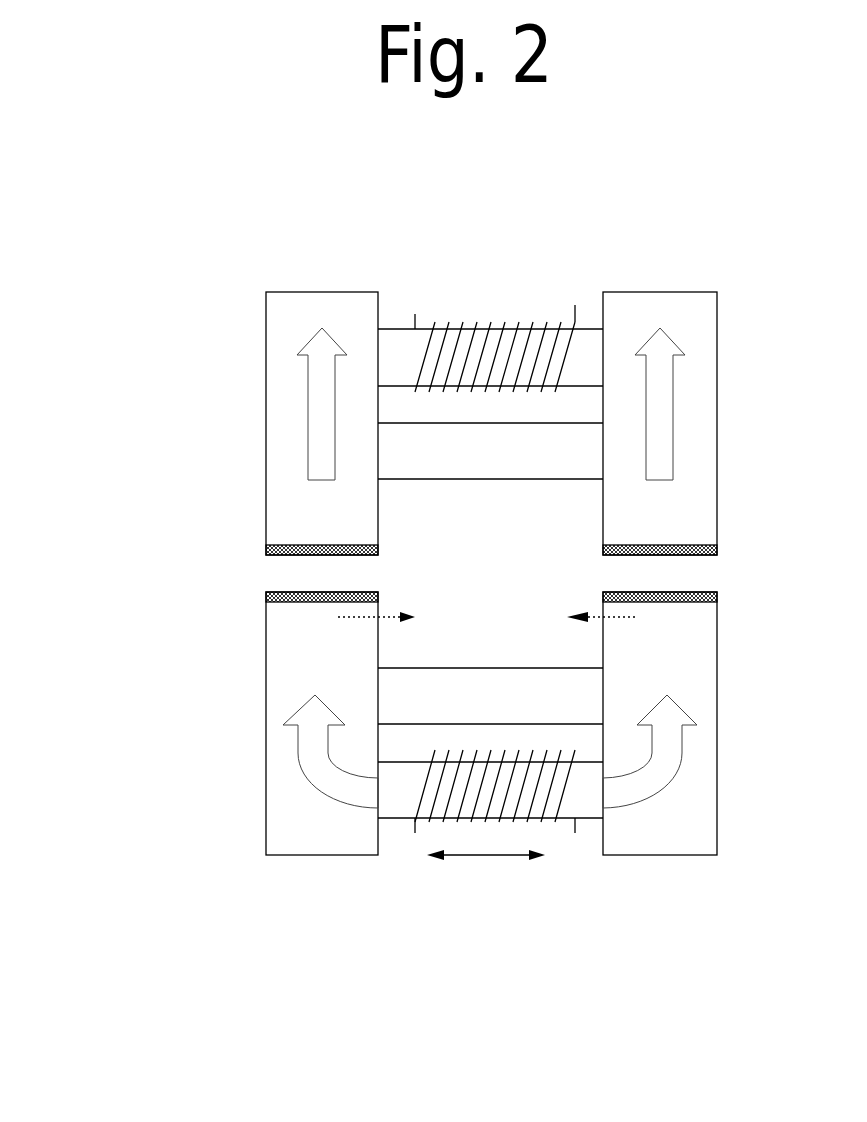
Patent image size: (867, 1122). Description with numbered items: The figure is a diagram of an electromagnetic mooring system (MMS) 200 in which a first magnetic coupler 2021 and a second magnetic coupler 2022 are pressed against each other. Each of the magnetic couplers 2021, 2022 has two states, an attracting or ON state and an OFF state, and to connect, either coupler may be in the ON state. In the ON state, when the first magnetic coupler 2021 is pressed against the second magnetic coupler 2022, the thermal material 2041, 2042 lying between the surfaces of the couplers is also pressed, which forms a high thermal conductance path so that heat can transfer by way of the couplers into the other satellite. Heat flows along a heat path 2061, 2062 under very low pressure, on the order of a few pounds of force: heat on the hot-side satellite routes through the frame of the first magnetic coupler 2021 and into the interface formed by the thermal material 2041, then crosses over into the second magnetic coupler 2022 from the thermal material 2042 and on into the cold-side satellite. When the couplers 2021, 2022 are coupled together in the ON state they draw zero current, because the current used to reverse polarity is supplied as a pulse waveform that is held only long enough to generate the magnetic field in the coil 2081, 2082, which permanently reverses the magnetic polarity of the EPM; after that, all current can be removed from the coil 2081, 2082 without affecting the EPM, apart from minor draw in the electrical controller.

The electromagnetic mooring system 200 is at (160, 168).
The second magnetic coupler 2022 is at (367, 386).
The first magnetic coupler 2021 is at (371, 758).
The thermal material 2042 is at (466, 523).
The thermal material 2041 is at (466, 628).
The heat path 2062 is at (443, 358).
The heat path 2061 is at (444, 801).
The coil 2082 is at (548, 304).
The coil 2081 is at (569, 837).